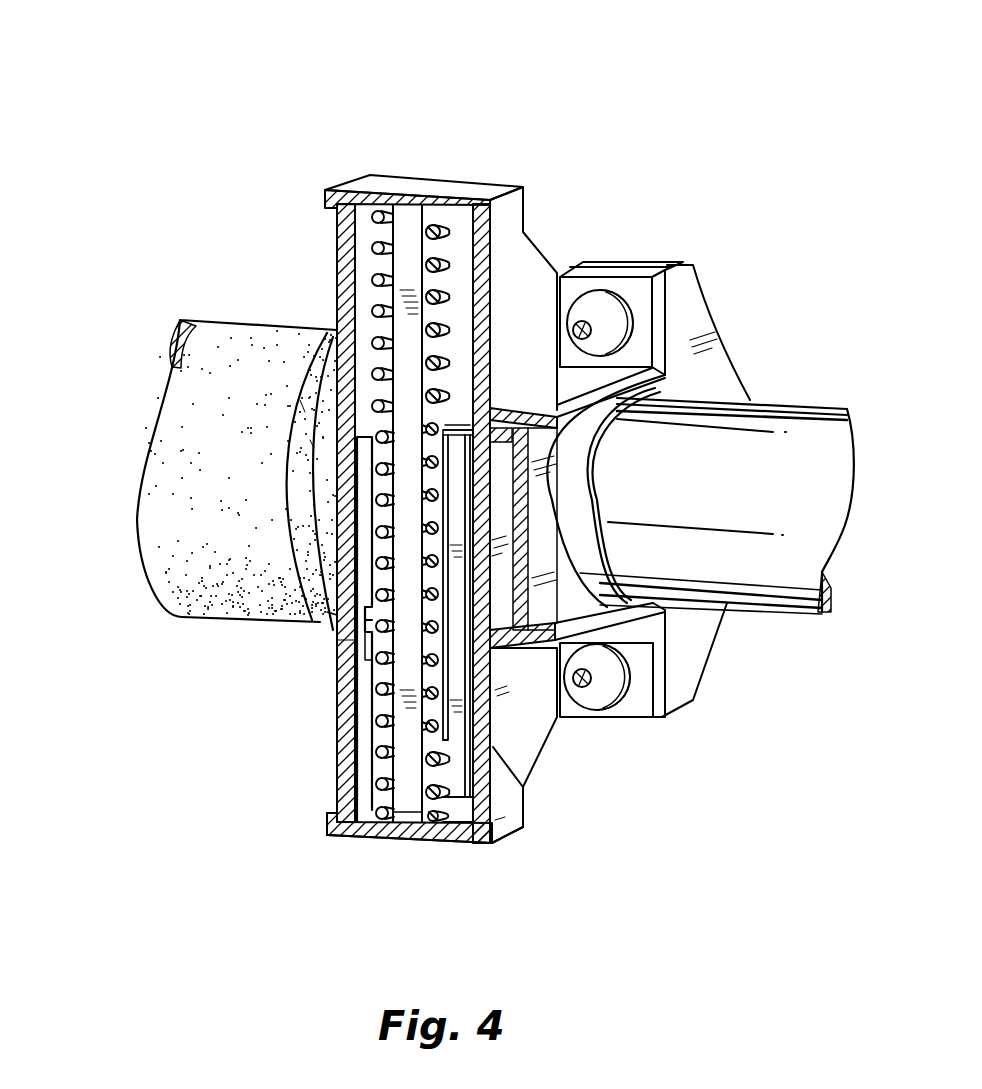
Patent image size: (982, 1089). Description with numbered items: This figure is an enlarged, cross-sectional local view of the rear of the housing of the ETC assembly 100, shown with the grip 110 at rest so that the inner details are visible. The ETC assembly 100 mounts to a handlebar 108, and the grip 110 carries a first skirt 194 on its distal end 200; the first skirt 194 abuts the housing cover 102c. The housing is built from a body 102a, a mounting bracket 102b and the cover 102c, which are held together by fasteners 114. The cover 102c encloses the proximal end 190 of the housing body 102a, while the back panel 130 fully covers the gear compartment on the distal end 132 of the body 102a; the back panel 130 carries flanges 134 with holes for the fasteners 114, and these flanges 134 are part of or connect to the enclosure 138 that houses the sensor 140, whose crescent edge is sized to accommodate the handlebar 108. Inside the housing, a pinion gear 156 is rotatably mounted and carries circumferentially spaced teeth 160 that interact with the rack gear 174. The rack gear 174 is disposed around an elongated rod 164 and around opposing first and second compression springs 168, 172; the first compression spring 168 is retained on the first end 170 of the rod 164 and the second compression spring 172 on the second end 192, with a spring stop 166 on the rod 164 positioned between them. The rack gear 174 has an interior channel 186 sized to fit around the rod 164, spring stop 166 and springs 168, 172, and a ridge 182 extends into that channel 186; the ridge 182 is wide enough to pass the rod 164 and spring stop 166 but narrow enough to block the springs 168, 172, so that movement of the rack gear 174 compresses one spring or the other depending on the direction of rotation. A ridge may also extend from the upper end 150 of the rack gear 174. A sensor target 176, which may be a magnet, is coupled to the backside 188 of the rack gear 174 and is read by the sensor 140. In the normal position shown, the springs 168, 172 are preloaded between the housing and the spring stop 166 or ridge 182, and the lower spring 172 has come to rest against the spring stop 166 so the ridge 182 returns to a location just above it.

The ETC assembly 100 is at (210, 145).
The housing body 102a is at (520, 240).
The mounting bracket 102b is at (693, 315).
The housing cover 102c is at (330, 190).
The handlebar 108 is at (820, 435).
The grip 110 is at (199, 335).
The fasteners 114 is at (608, 300).
The back panel 130 is at (453, 347).
The distal end 132 is at (503, 200).
The flanges 134 is at (635, 300).
The enclosure 138 is at (540, 652).
The sensor 140 is at (548, 507).
The upper end 150 is at (470, 400).
The pinion gear 156 is at (452, 385).
The teeth 160 is at (476, 320).
The rod 164 is at (412, 813).
The spring stop 166 is at (337, 655).
The first compression spring 168 is at (375, 222).
The first end 170 is at (408, 210).
The second compression spring 172 is at (443, 800).
The rack gear 174 is at (333, 627).
The sensor target 176 is at (523, 790).
The ridge 182 is at (340, 637).
The interior channel 186 is at (375, 470).
The backside 188 is at (365, 500).
The proximal end 190 is at (397, 172).
The second end 192 is at (410, 795).
The first skirt 194 is at (300, 405).
The distal end 200 is at (312, 445).